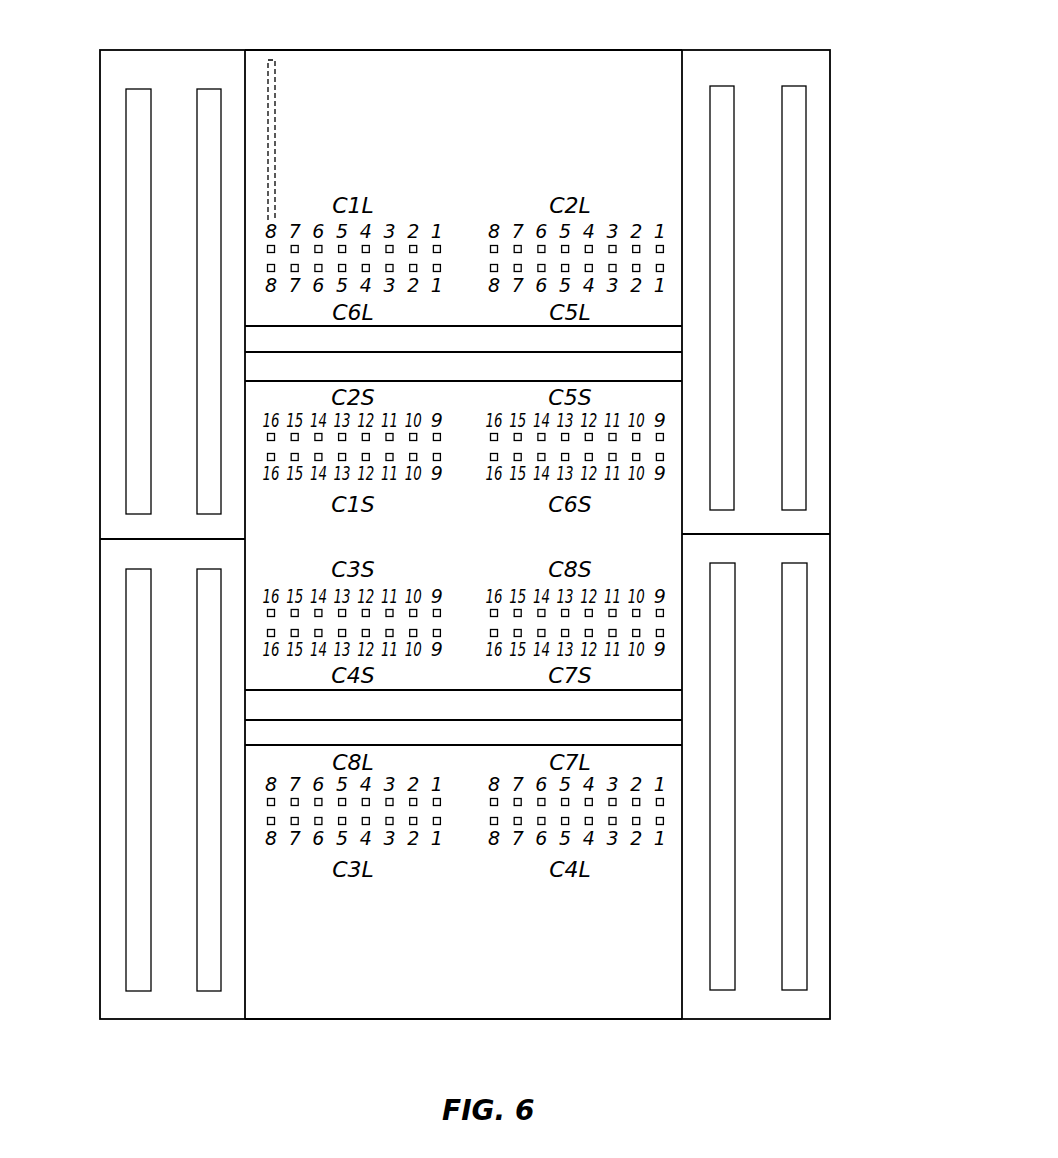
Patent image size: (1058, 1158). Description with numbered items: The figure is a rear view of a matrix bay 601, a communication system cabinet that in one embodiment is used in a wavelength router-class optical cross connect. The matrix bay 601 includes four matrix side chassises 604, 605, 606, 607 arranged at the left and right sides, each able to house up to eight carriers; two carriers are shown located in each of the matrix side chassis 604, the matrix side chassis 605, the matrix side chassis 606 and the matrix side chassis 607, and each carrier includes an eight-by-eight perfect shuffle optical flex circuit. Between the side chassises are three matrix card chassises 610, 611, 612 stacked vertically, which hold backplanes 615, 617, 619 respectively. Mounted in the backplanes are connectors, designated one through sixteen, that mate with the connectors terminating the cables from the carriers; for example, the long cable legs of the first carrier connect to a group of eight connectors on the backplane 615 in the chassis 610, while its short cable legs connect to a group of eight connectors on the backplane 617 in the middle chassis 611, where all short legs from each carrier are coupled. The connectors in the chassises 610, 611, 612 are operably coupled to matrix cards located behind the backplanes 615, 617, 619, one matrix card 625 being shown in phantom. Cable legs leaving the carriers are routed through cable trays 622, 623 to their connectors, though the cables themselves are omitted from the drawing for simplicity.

The matrix bay 601 is at (836, 138).
The matrix side chassis 604 is at (138, 281).
The matrix side chassis 605 is at (793, 273).
The matrix side chassis 606 is at (137, 773).
The matrix side chassis 607 is at (794, 770).
The matrix card chassis 610 is at (463, 44).
The matrix card chassis 611 is at (575, 535).
The matrix card chassis 612 is at (492, 1025).
The backplane 615 is at (463, 225).
The backplane 617 is at (463, 469).
The backplane 619 is at (463, 846).
The cable tray 622 is at (574, 313).
The cable tray 623 is at (576, 679).
The matrix card 625 is at (306, 140).